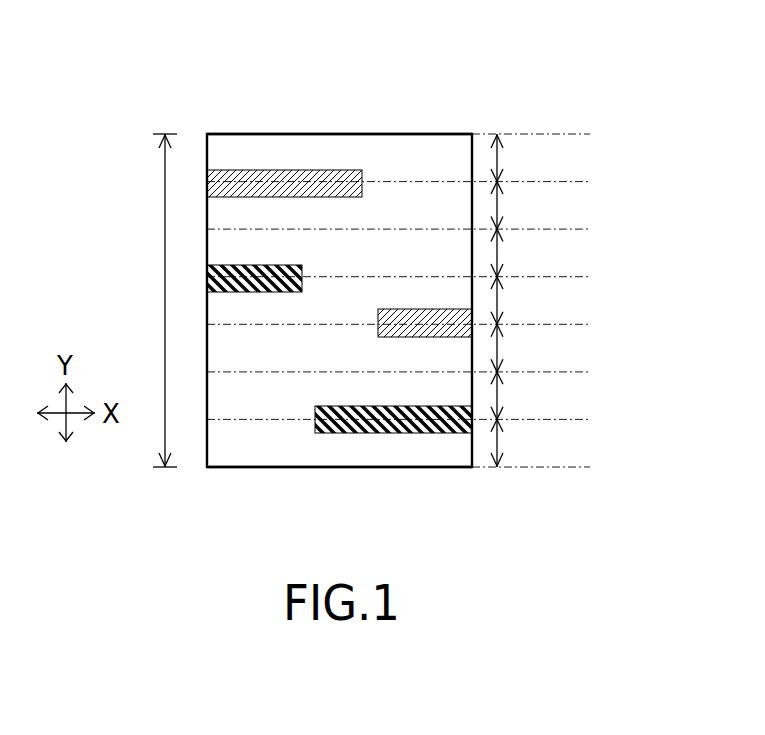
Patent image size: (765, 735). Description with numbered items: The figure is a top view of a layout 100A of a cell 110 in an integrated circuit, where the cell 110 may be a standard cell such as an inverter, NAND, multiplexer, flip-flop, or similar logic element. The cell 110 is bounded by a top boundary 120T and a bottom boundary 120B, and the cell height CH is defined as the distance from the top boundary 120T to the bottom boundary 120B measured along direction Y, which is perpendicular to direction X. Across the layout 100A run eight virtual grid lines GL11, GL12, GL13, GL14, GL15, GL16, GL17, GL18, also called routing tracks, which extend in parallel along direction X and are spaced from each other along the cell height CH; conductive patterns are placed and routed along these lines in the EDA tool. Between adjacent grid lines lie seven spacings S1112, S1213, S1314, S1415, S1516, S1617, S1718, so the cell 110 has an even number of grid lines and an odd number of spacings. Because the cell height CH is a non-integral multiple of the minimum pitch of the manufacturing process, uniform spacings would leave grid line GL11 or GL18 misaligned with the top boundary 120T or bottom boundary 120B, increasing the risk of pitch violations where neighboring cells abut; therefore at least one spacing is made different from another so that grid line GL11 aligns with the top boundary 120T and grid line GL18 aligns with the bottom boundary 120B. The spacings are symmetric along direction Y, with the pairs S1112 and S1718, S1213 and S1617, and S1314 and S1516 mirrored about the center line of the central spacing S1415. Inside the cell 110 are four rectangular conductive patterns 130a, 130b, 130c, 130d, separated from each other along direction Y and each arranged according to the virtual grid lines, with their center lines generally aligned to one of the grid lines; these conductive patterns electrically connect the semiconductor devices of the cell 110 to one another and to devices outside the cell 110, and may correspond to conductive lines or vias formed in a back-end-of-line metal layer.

The layout 100A is at (188, 42).
The cell 110 is at (200, 133).
The top boundary 120T is at (320, 134).
The bottom boundary 120B is at (377, 467).
The conductive pattern 130a is at (353, 197).
The conductive pattern 130b is at (280, 266).
The conductive pattern 130c is at (420, 310).
The conductive pattern 130d is at (340, 407).
The cell height CH is at (146, 300).
The virtual grid line GL11 is at (625, 135).
The virtual grid line GL12 is at (625, 183).
The virtual grid line GL13 is at (625, 230).
The virtual grid line GL14 is at (625, 278).
The virtual grid line GL15 is at (625, 325).
The virtual grid line GL16 is at (625, 373).
The virtual grid line GL17 is at (625, 420).
The virtual grid line GL18 is at (625, 468).
The spacing S1112 is at (550, 158).
The spacing S1213 is at (550, 206).
The spacing S1314 is at (550, 253).
The spacing S1415 is at (550, 301).
The spacing S1516 is at (550, 348).
The spacing S1617 is at (550, 396).
The spacing S1718 is at (550, 443).